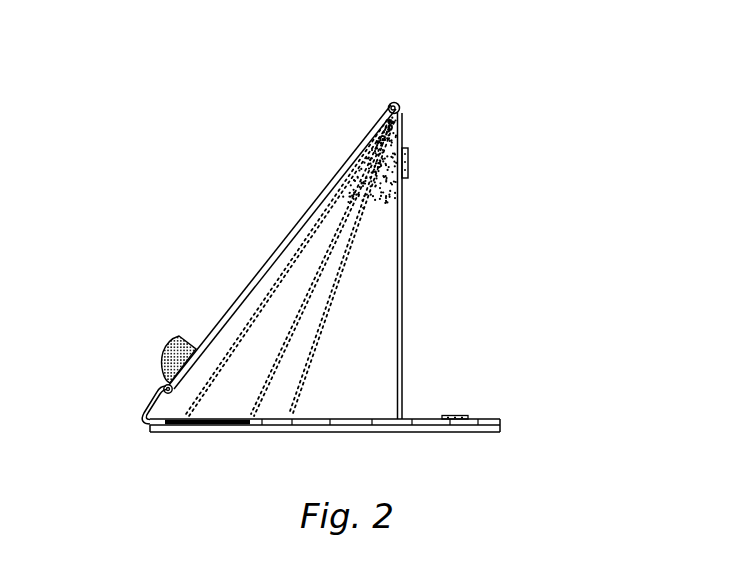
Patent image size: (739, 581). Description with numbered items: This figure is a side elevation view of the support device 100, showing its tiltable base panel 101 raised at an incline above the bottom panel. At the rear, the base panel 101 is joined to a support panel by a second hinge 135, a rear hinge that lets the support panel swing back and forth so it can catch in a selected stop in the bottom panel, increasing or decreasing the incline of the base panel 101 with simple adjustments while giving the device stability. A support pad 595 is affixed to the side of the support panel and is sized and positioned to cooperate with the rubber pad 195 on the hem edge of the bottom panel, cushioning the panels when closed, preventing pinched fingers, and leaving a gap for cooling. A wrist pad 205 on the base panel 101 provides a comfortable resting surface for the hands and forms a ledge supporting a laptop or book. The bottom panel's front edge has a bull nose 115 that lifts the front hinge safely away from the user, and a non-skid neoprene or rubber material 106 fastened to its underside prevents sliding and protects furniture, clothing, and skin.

The support device 100 is at (132, 131).
The base panel 101 is at (290, 234).
The second hinge 135 is at (402, 101).
The support pad 595 is at (408, 160).
The wrist pad 205 is at (165, 348).
The bull nose 115 is at (143, 410).
The non-skid neoprene or rubber material 106 is at (490, 433).
The rubber pad 195 is at (462, 413).